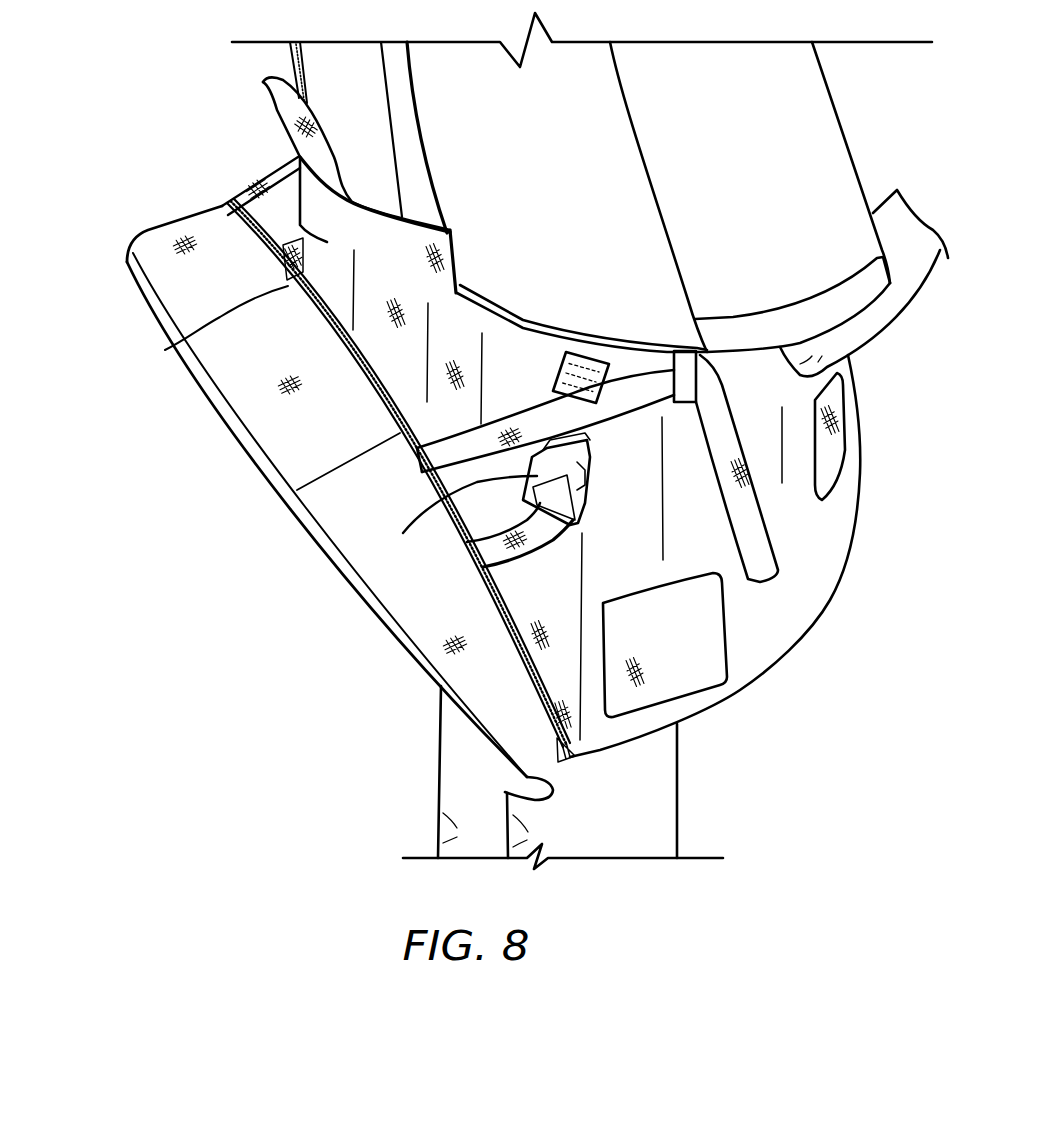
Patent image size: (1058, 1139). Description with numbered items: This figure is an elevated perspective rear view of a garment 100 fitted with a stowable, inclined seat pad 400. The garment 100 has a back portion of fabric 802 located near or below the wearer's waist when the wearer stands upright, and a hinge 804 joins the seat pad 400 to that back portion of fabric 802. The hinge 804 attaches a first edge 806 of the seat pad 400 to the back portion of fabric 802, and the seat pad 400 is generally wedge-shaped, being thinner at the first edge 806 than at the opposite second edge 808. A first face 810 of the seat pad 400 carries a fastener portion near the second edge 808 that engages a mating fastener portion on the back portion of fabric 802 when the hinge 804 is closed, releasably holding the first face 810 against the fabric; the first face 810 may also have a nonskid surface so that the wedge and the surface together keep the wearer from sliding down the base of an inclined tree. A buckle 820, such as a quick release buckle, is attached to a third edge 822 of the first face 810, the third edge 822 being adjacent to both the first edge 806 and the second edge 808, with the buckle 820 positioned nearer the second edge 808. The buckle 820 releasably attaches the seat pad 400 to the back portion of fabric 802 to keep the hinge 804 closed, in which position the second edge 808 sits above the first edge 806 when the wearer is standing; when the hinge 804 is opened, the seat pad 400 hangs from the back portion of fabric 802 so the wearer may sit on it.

The garment 100 is at (807, 623).
The seat pad 400 is at (157, 233).
The back portion of fabric 802 is at (264, 242).
The hinge 804 is at (573, 757).
The first edge 806 is at (505, 792).
The second edge 808 is at (165, 350).
The first face 810 is at (253, 192).
The buckle 820 is at (403, 533).
The third edge 822 is at (483, 567).